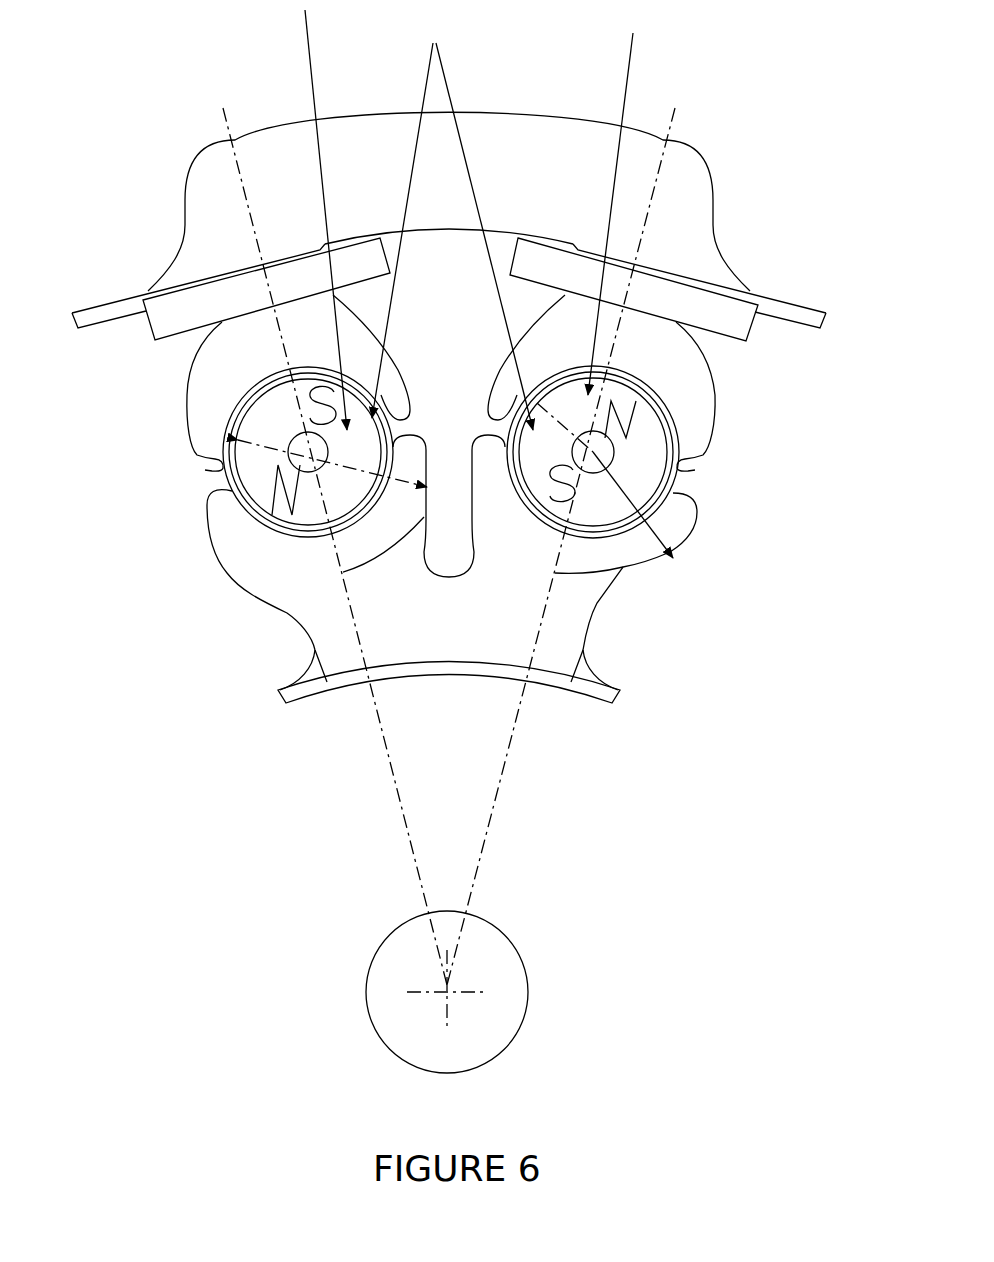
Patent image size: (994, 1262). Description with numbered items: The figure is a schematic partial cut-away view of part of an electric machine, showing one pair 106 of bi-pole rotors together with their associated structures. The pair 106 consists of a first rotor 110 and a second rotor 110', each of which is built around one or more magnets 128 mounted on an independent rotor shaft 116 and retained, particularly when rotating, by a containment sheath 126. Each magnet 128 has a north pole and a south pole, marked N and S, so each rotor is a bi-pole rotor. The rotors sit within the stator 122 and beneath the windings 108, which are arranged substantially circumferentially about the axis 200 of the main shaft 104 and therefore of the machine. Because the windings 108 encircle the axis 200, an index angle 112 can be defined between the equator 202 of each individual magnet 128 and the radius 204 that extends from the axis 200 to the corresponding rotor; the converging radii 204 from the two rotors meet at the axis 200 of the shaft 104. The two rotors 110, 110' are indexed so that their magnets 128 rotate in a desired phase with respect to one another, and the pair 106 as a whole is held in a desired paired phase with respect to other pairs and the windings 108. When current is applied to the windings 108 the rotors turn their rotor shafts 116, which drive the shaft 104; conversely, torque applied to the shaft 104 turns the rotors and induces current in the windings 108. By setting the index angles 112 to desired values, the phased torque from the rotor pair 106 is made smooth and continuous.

The shaft 104 is at (487, 955).
The rotor pair 106 is at (499, 229).
The winding 108 is at (190, 310).
The first rotor 110 is at (289, 215).
The second rotor 110' is at (650, 211).
The index angle 112 is at (393, 540).
The rotor shaft 116 is at (296, 460).
The stator 122 is at (207, 405).
The containment sheath 126 is at (222, 479).
The magnet 128 is at (433, 43).
The axis 200 is at (447, 992).
The equator 202 is at (236, 441).
The radius 204 is at (225, 125).